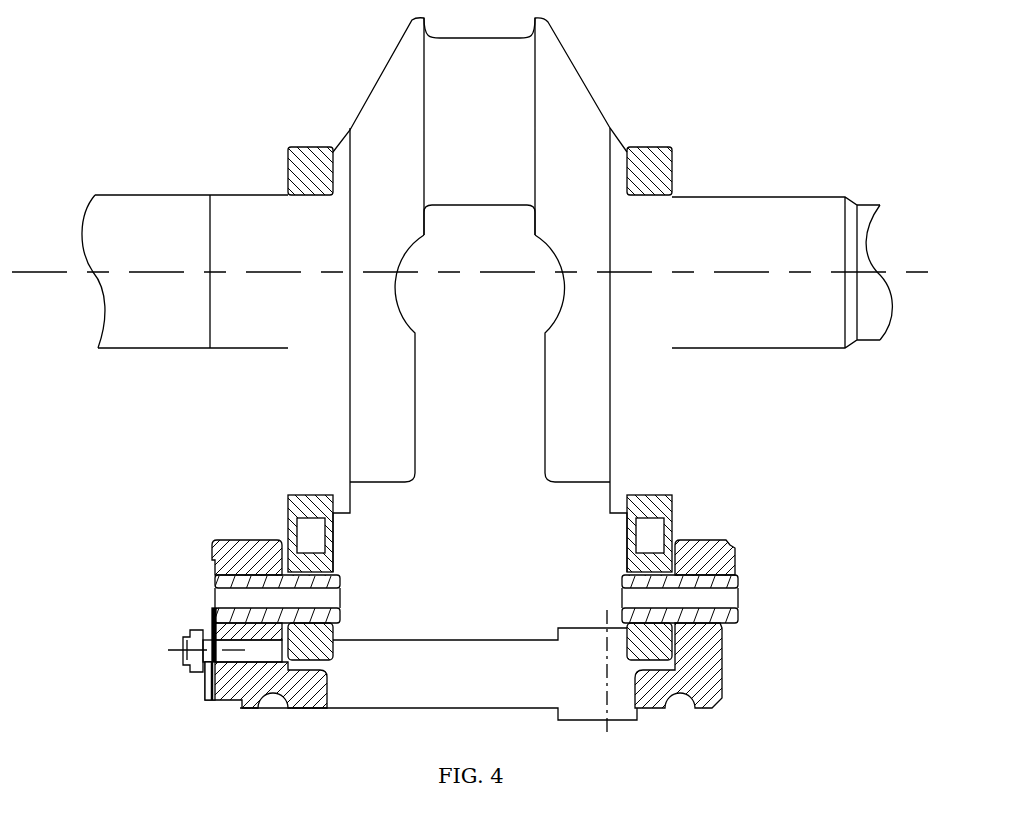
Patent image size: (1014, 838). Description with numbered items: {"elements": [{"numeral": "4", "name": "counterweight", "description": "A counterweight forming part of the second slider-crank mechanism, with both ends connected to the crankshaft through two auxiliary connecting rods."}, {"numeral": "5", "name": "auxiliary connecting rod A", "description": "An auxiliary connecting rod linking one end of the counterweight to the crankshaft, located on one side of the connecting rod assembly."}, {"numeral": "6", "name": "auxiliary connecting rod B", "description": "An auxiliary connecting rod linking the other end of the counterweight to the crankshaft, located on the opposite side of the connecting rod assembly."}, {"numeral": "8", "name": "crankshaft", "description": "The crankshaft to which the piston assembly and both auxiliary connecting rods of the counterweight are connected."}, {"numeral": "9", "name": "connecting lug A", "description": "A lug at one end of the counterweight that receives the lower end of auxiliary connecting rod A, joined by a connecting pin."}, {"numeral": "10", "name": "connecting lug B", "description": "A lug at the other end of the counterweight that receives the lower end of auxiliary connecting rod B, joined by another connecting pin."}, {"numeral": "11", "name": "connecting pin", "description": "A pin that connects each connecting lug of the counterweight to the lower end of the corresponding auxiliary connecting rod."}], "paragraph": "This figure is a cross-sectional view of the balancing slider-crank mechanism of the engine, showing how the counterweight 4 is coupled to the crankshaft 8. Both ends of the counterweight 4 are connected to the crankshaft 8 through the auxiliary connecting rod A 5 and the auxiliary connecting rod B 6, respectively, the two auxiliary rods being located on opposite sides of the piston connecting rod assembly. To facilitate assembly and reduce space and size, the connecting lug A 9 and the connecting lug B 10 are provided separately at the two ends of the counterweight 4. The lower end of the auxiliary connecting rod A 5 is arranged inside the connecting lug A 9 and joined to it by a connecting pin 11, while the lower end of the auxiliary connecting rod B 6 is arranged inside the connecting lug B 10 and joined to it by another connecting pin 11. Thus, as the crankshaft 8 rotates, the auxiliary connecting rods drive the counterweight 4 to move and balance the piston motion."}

The housing base block 4 is at (217, 697).
The first bearing 5 is at (288, 513).
The second bearing 6 is at (672, 500).
The shaft 8 is at (158, 242).
The seal ring 9 is at (222, 547).
The seal ring 10 is at (703, 560).
The spacer sleeve 11 is at (272, 592).